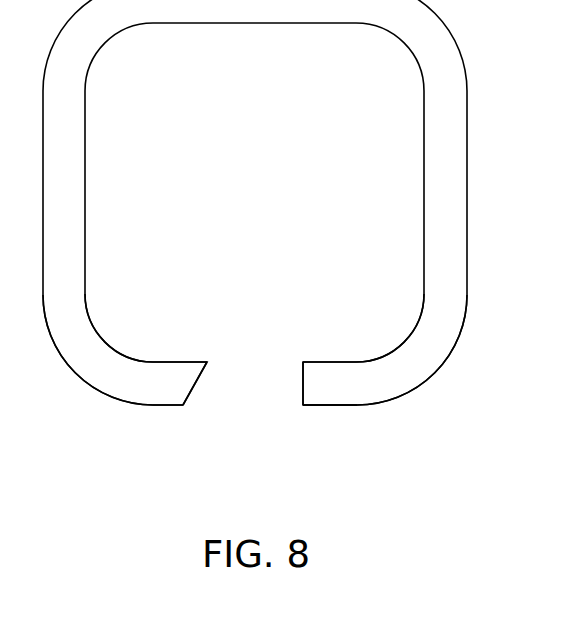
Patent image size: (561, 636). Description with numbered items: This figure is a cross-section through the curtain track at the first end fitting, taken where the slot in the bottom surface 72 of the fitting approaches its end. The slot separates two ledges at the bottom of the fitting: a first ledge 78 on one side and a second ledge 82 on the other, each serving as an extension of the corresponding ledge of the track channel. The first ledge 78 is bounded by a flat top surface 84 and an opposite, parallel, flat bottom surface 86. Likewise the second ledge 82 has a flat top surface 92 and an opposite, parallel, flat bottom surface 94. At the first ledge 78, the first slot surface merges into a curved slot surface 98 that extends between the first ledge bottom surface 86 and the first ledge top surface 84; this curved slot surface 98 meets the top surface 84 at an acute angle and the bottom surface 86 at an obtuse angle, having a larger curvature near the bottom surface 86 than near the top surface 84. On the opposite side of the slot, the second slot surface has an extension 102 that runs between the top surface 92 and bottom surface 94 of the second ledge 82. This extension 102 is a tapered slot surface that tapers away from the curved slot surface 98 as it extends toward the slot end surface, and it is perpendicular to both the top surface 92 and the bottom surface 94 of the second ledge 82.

The bottom surface 72 is at (397, 398).
The first ledge 78 is at (150, 405).
The second ledge 82 is at (350, 405).
The top surface 84 is at (170, 362).
The bottom surface 86 is at (181, 406).
The top surface 92 is at (315, 362).
The bottom surface 94 is at (318, 405).
The curved slot surface 98 is at (193, 381).
The extension of the second slot surface 102 is at (303, 391).